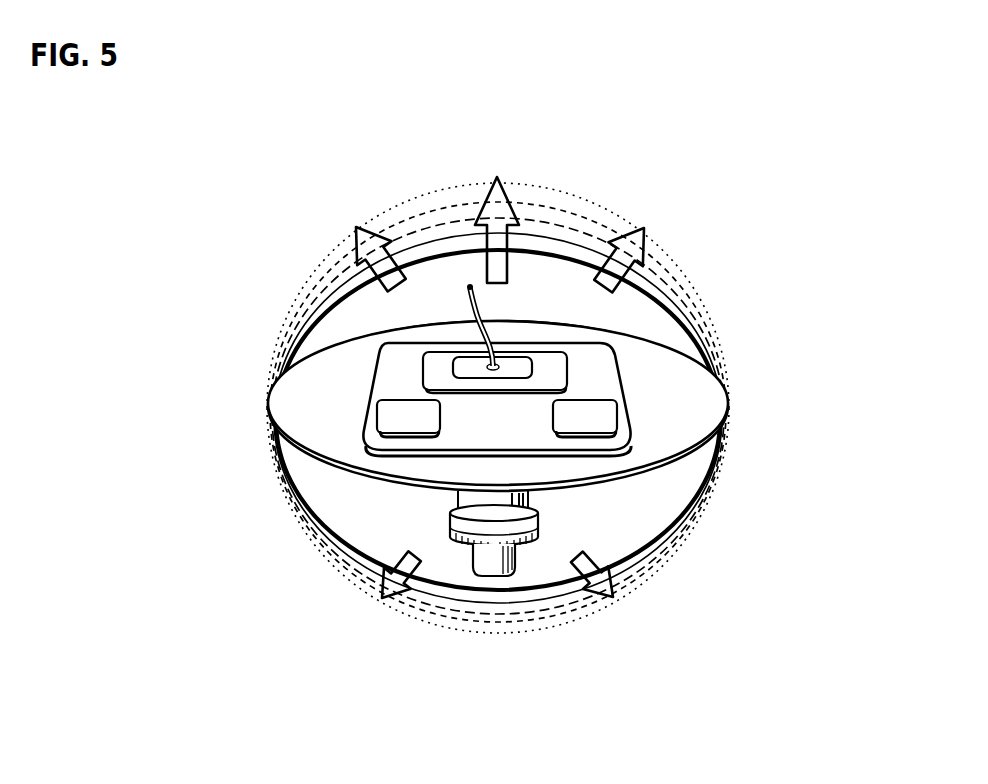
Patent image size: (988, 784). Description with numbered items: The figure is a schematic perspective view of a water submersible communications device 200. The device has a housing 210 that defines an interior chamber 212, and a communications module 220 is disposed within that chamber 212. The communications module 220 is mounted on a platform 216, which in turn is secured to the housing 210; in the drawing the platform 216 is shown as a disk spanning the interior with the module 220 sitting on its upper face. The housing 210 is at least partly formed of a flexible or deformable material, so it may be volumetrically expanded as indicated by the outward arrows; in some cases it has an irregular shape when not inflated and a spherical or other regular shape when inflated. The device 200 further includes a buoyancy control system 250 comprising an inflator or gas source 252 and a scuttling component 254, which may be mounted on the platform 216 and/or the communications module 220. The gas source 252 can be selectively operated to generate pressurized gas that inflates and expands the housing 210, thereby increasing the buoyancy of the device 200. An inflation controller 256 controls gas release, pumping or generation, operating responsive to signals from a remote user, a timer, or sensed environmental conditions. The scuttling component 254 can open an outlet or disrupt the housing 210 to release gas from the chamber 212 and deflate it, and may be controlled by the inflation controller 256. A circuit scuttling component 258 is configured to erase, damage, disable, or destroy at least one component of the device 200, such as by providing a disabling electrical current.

The communications device 200 is at (693, 142).
The housing 210 is at (680, 320).
The interior chamber 212 is at (362, 315).
The platform 216 is at (692, 392).
The communications module 220 is at (362, 359).
The buoyancy control system 250 is at (362, 522).
The gas source 252 is at (500, 513).
The scuttling component 254 is at (490, 567).
The inflation controller 256 is at (407, 413).
The circuit scuttling component 258 is at (585, 417).